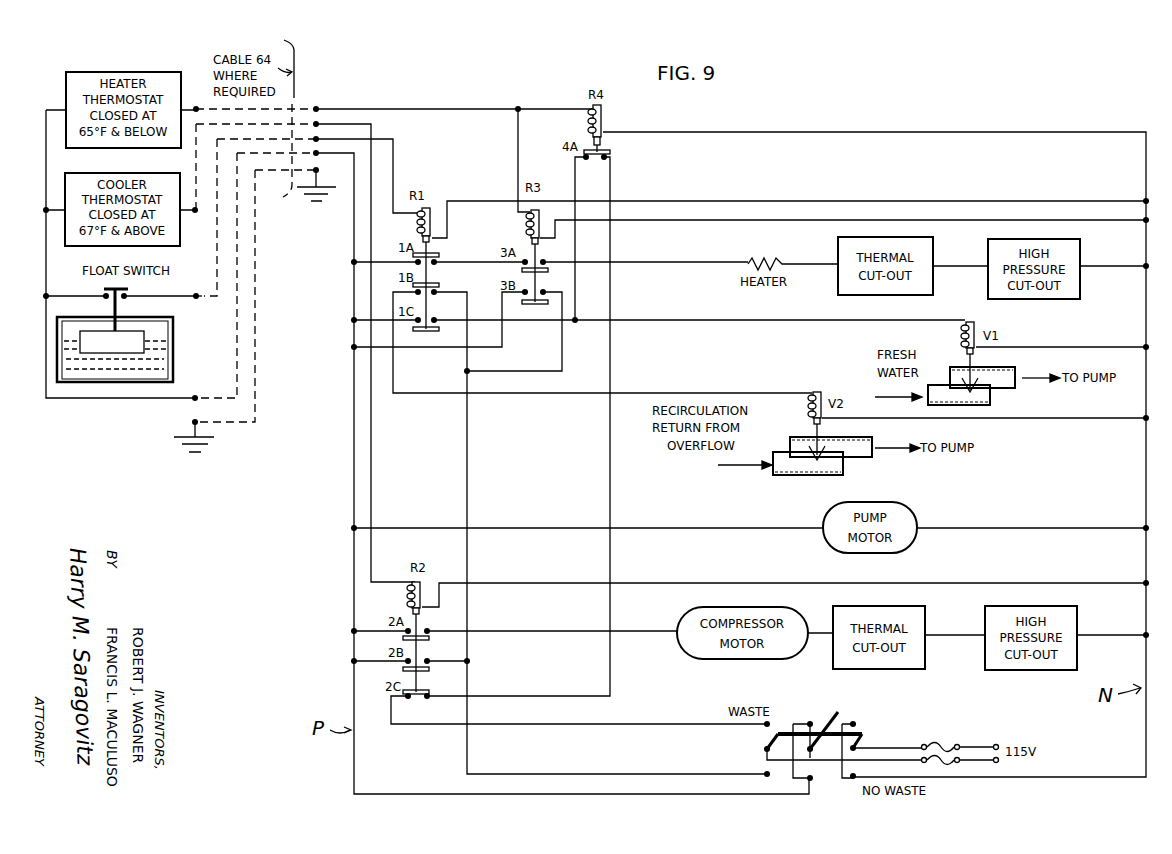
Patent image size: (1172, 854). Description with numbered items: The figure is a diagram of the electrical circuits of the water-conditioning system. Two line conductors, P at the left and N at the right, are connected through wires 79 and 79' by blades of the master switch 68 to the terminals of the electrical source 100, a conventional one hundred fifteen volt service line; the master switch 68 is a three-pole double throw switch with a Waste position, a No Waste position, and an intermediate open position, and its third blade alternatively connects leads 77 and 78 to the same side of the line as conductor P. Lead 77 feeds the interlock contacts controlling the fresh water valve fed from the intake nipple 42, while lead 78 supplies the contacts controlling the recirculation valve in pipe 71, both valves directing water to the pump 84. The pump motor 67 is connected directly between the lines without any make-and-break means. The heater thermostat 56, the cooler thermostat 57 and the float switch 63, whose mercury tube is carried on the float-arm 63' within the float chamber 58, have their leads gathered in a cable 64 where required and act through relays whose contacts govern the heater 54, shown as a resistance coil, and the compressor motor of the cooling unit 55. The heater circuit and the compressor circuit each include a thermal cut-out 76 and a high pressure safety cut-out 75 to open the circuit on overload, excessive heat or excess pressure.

The heater thermostat 56 is at (157, 72).
The cooler thermostat 57 is at (122, 173).
The float switch 63 is at (140, 304).
The float-arm 63' is at (151, 334).
The float chamber 58 is at (155, 360).
The cable 64 is at (294, 50).
The heater unit 54 is at (765, 267).
The thermal cut-out guard 76 is at (935, 250).
The safety cut-out 75 is at (1082, 256).
The intake nipple 42 is at (922, 392).
The pump 84 is at (985, 425).
The pipe 71 is at (775, 465).
The water pump 67 is at (912, 512).
The cooling unit 55 is at (760, 607).
The lead 77 is at (648, 724).
The lead 78 is at (640, 774).
The wire 79 is at (581, 779).
The wire 79' is at (999, 766).
The master switch 68 is at (830, 724).
The electrical source 100 is at (985, 734).